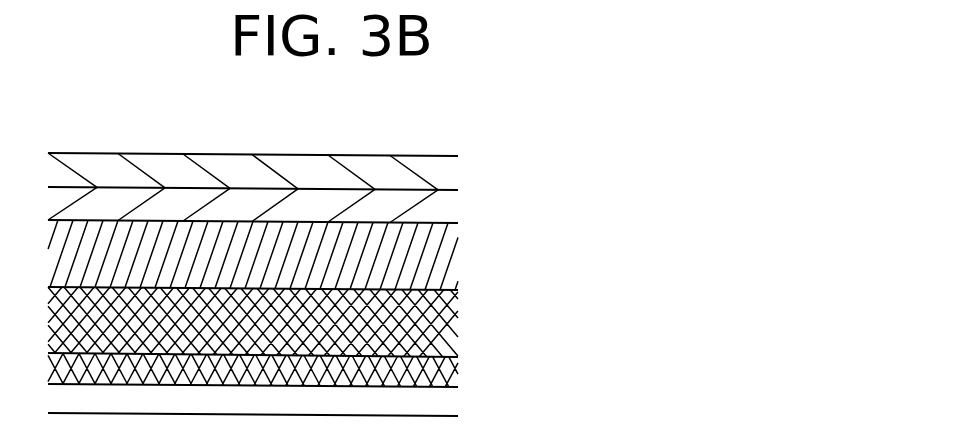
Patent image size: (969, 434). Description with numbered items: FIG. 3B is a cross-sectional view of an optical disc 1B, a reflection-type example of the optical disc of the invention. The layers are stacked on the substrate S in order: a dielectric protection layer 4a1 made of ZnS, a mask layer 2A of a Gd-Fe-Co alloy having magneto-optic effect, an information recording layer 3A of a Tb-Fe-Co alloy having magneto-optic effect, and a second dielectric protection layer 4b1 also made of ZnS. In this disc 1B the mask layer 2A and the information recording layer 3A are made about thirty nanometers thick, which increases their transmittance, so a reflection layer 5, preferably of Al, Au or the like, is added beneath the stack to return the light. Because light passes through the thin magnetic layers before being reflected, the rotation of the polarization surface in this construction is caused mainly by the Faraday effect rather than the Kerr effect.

The optical disc 1B is at (175, 98).
The substrate S is at (471, 153).
The dielectric protection layer 4a1 is at (471, 191).
The mask layer 2A is at (471, 225).
The information recording layer 3A is at (471, 290).
The dielectric protection layer 4b1 is at (471, 358).
The reflection layer 5 is at (471, 393).